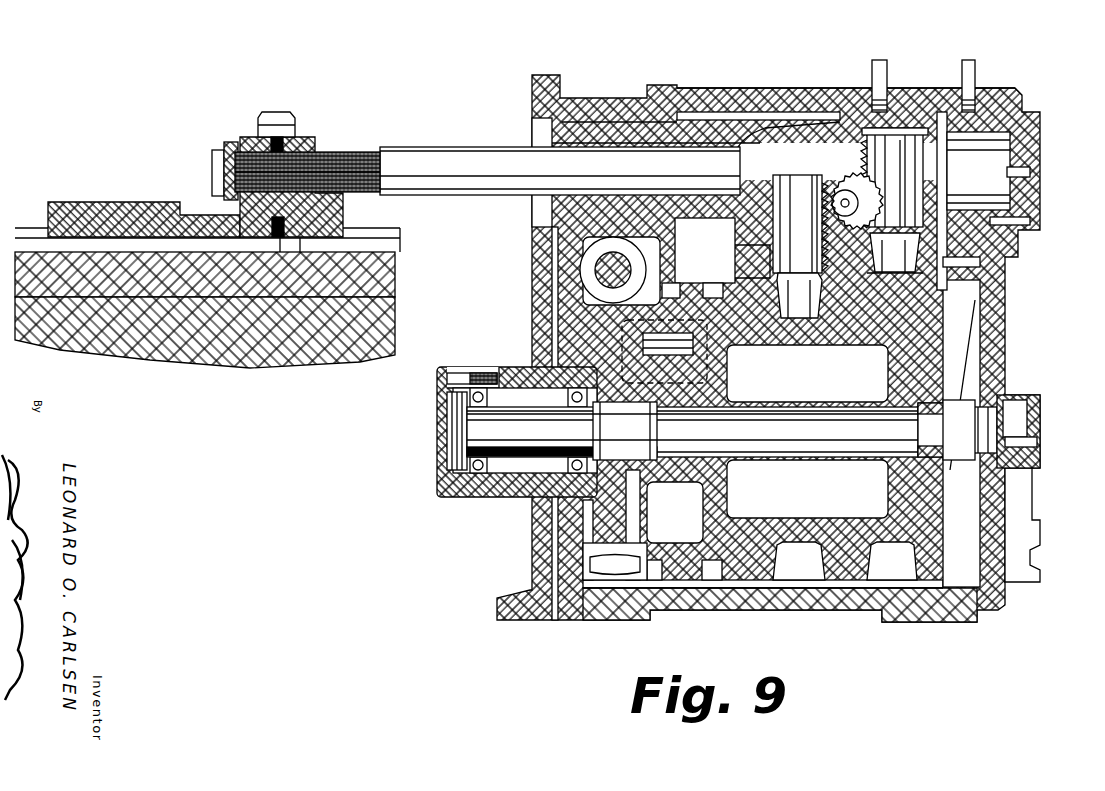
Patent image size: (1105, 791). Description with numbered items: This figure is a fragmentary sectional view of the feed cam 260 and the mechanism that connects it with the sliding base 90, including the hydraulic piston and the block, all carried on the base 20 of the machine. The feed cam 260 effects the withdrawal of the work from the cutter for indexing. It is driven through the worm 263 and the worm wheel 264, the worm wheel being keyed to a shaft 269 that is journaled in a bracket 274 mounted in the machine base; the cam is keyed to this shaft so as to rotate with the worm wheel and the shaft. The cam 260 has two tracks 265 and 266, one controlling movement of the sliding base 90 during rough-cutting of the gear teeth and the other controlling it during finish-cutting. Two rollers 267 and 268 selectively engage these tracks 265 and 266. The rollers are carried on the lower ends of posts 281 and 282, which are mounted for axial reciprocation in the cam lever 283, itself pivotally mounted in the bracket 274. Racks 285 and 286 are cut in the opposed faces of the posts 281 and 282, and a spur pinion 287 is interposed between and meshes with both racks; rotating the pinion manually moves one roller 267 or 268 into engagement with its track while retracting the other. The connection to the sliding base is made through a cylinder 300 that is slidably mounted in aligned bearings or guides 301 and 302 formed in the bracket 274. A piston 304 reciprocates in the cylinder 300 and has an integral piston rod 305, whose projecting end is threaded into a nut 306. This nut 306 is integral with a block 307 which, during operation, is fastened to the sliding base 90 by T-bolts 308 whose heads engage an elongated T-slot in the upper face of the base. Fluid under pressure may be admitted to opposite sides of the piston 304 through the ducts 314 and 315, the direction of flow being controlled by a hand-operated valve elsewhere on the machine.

The base 20 is at (258, 338).
The sliding base 90 is at (382, 275).
The feed cam 260 is at (846, 566).
The worm 263 is at (590, 268).
The worm wheel 264 is at (615, 567).
The cam track 265 is at (795, 570).
The cam track 266 is at (893, 565).
The roller 267 is at (785, 300).
The roller 268 is at (895, 262).
The shaft 269 is at (828, 452).
The bracket 274 is at (568, 548).
The post 281 is at (772, 225).
The post 282 is at (905, 168).
The cam lever 283 is at (740, 256).
The rack 285 is at (822, 305).
The rack 286 is at (868, 145).
The spur pinion 287 is at (842, 180).
The cylinder 300 is at (768, 130).
The bearing or guide 301 is at (612, 100).
The bearing or guide 302 is at (912, 92).
The piston 304 is at (1000, 148).
The piston rod 305 is at (492, 150).
The nut 306 is at (306, 138).
The block 307 is at (140, 205).
The T-bolt 308 is at (300, 226).
The duct 314 is at (875, 60).
The duct 315 is at (972, 62).